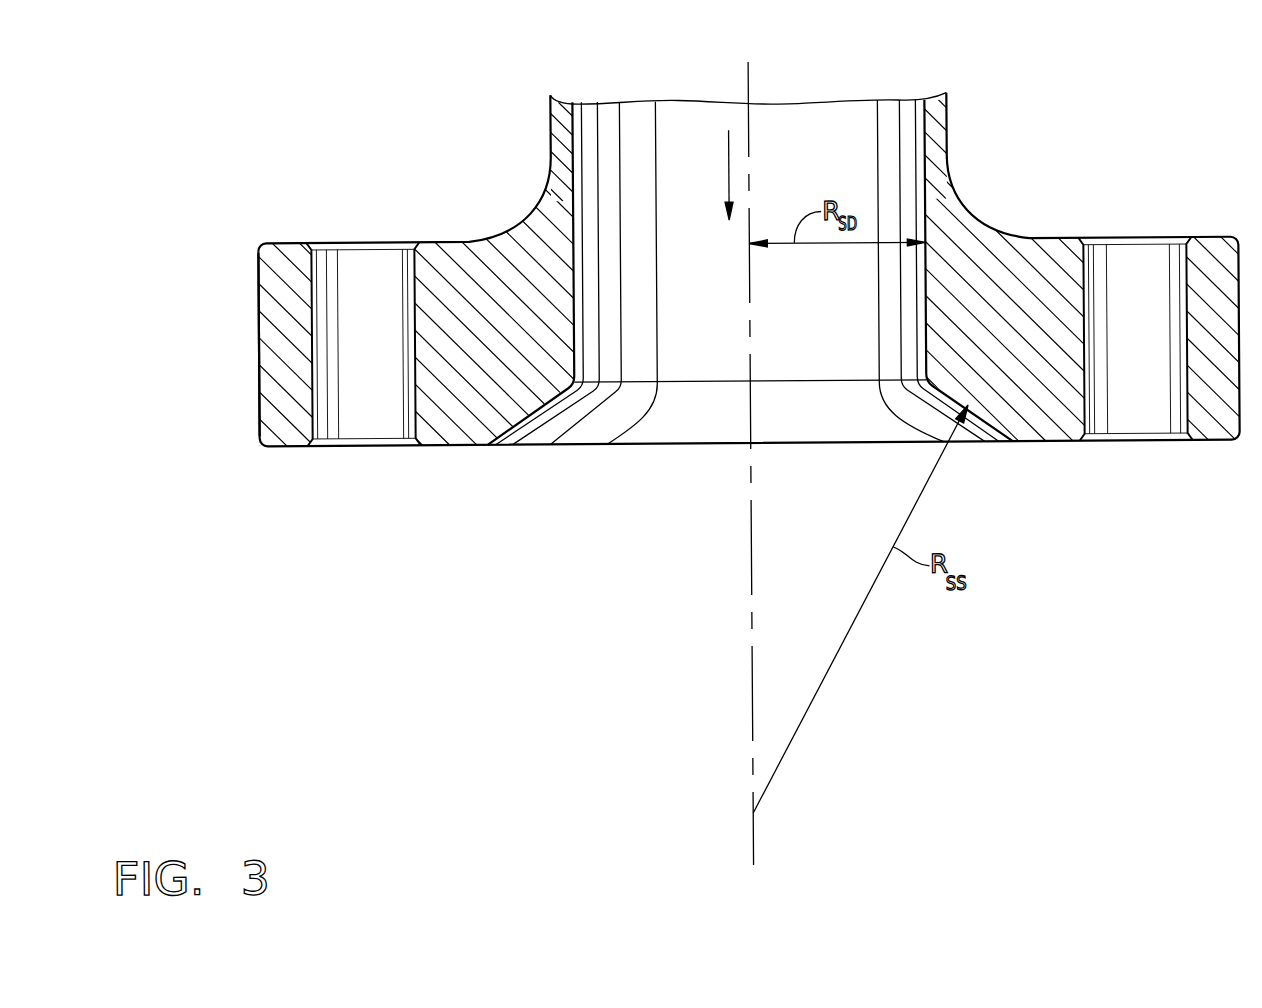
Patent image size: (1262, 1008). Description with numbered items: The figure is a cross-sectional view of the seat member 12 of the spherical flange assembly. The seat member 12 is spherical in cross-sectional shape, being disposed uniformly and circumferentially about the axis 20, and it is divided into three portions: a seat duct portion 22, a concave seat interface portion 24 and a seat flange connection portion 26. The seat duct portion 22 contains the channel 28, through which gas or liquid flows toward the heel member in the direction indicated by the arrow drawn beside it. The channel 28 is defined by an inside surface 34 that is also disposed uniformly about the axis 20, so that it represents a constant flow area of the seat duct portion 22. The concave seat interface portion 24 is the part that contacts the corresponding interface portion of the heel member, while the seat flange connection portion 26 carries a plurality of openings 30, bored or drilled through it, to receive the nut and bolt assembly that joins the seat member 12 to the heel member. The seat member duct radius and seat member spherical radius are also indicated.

The seat member 12 is at (968, 202).
The axis 20 is at (750, 80).
The seat duct portion 22 is at (574, 166).
The concave seat interface portion 24 is at (557, 397).
The seat flange connection portion 26 is at (259, 364).
The channel 28 is at (715, 266).
The openings 30 is at (350, 279).
The inside surface 34 is at (574, 332).